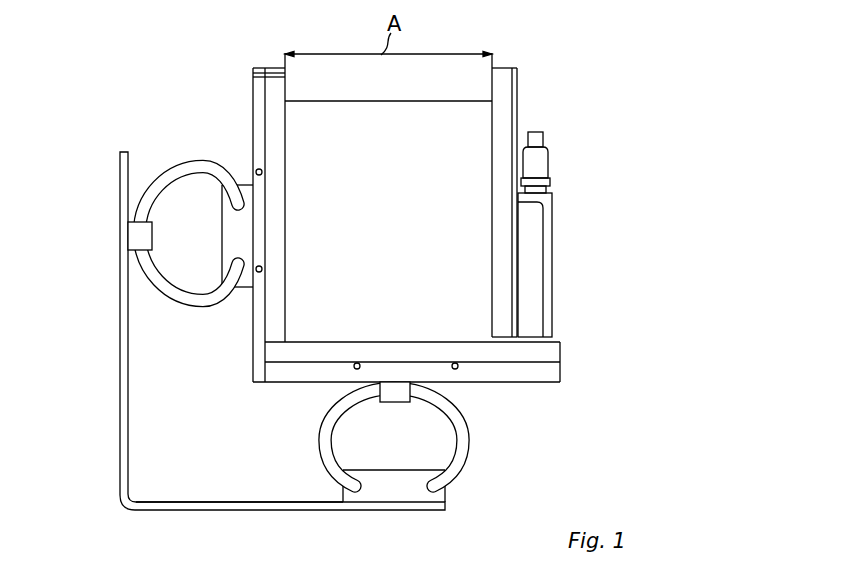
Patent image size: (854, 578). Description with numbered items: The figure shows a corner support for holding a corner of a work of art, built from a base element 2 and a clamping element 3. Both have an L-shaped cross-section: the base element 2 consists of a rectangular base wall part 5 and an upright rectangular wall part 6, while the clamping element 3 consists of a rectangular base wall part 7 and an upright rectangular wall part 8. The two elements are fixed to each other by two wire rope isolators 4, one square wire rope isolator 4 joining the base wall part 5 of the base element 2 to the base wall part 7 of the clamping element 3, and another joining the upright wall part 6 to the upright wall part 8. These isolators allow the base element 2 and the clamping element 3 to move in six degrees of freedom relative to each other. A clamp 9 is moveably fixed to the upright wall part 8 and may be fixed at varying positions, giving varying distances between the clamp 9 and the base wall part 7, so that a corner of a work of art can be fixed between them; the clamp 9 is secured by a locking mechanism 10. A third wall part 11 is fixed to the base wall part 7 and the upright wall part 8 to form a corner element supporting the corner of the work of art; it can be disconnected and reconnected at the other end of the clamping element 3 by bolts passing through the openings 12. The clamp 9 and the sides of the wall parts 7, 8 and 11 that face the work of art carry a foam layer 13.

The base element 2 is at (225, 510).
The clamping element 3 is at (528, 372).
The wire rope isolator 4 is at (180, 308).
The base wall part 5 is at (135, 428).
The upright wall part 6 is at (172, 510).
The base wall part 7 is at (258, 92).
The upright wall part 8 is at (475, 372).
The clamp 9 is at (500, 103).
The locking mechanism 10 is at (548, 163).
The third wall part 11 is at (440, 288).
The openings 12 is at (254, 172).
The foam layer 13 is at (273, 100).